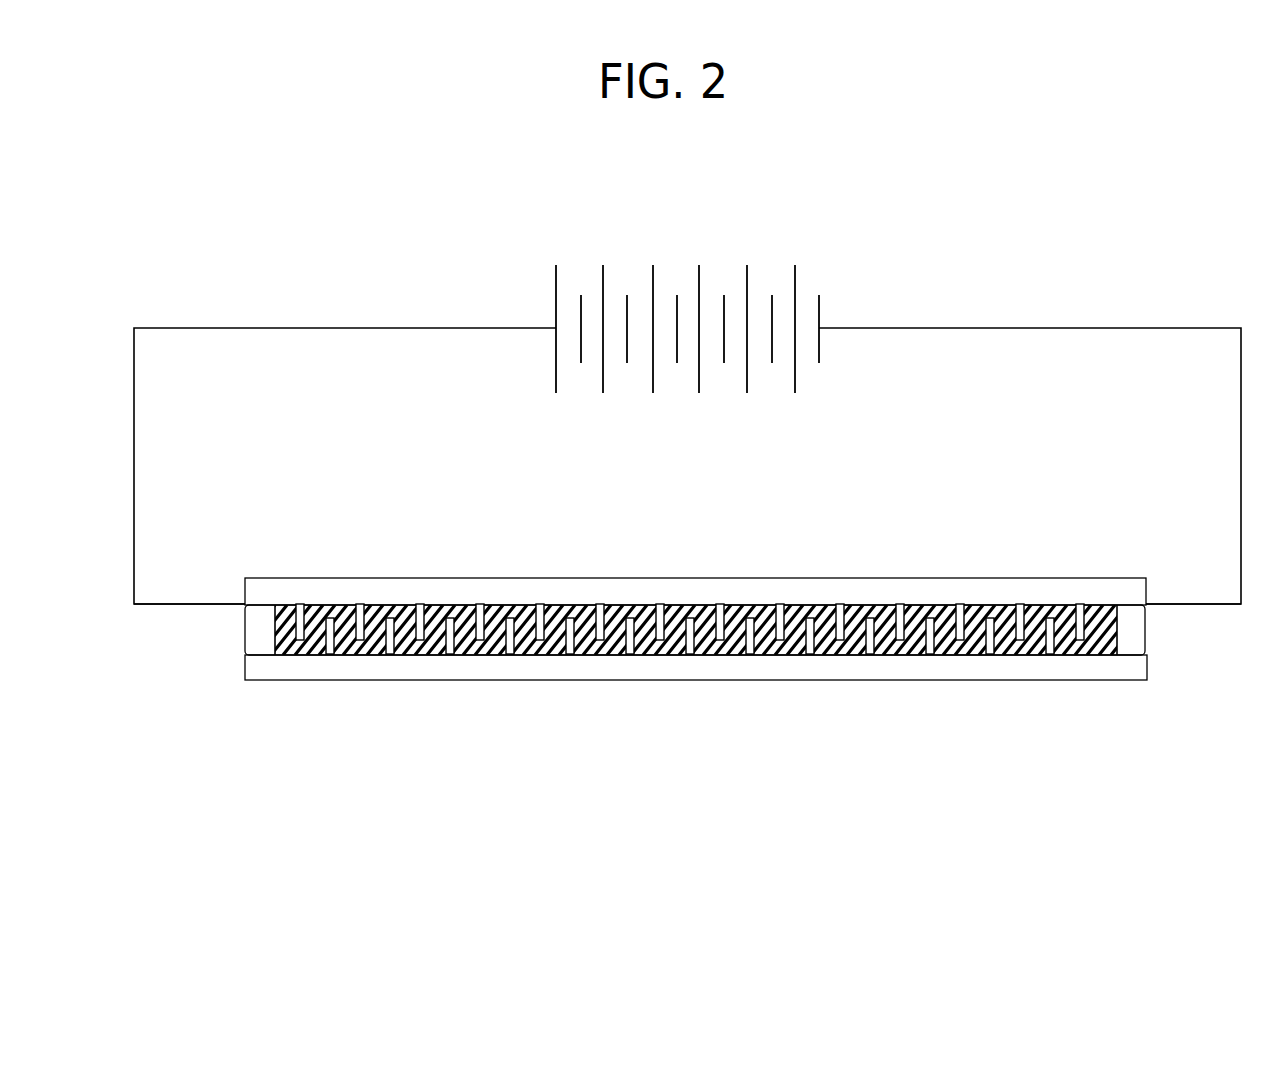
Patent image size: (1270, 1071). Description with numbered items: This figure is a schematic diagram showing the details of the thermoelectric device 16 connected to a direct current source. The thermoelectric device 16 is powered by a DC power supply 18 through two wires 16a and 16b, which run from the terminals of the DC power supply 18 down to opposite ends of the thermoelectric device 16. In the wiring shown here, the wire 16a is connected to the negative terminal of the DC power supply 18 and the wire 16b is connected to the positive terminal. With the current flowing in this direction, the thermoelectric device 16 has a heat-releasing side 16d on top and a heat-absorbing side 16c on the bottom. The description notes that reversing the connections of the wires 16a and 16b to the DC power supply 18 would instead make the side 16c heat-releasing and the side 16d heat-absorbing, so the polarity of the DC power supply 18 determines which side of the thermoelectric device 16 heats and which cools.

The thermoelectric device 16 is at (687, 651).
The wire 16a is at (1187, 602).
The wire 16b is at (217, 603).
The heat-absorbing side 16c is at (398, 668).
The heat-releasing side 16d is at (380, 590).
The DC power supply 18 is at (727, 283).